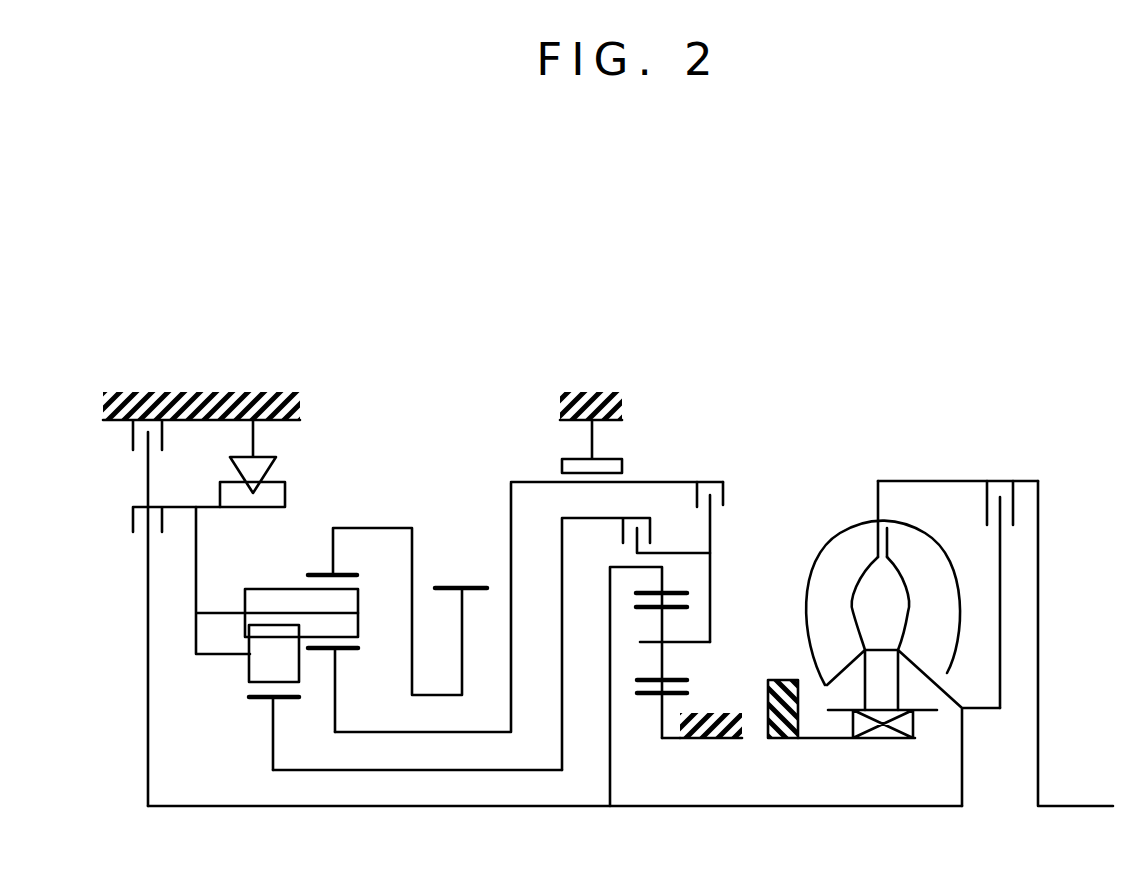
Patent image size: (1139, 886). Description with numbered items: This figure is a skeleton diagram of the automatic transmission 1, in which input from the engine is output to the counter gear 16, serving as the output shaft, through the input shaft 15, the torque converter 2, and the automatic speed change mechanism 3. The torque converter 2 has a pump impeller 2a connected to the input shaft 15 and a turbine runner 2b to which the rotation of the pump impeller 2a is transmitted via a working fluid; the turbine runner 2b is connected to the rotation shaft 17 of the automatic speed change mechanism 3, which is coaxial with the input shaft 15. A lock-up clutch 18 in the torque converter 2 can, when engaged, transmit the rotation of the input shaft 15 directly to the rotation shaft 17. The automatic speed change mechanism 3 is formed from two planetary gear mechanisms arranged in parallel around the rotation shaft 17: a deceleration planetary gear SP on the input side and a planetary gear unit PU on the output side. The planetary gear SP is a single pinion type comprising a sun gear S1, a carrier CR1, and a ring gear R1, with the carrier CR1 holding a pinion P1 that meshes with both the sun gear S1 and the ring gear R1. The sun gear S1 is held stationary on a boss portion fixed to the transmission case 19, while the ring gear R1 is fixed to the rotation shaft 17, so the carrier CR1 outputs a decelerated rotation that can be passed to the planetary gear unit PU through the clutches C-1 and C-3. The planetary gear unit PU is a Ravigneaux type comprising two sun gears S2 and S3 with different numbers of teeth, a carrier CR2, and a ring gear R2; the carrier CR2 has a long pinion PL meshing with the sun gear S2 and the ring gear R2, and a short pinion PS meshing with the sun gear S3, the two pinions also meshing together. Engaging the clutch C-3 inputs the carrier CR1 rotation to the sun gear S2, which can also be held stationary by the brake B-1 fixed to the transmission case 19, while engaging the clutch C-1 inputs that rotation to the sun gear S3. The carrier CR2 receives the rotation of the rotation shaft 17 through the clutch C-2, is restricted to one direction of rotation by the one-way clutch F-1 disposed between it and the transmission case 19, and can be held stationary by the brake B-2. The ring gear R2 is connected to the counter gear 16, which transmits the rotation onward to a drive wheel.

The automatic transmission 1 is at (645, 245).
The torque converter 2 is at (853, 472).
The pump impeller 2a is at (862, 548).
The turbine runner 2b is at (925, 575).
The automatic speed change mechanism 3 is at (492, 357).
The input shaft 15 is at (1060, 803).
The counter gear 16 is at (470, 592).
The rotation shaft 17 is at (922, 808).
The lock-up clutch 18 is at (1020, 478).
The transmission case 19 is at (624, 424).
The planetary gear unit PU is at (325, 497).
The long pinion PL is at (348, 601).
The short pinion PS is at (265, 667).
The ring gear R2 is at (347, 572).
The sun gear S2 is at (338, 652).
The sun gear S3 is at (258, 702).
The carrier CR2 is at (190, 630).
The carrier CR1 is at (720, 568).
The ring gear R1 is at (672, 588).
The pinion P1 is at (672, 677).
The sun gear S1 is at (648, 700).
The planetary gear SP is at (698, 684).
The brake B-1 is at (591, 391).
The brake B-2 is at (201, 406).
The clutch C-1 is at (636, 644).
The clutch C-2 is at (160, 534).
The clutch C-3 is at (728, 562).
The one-way clutch F-1 is at (252, 435).